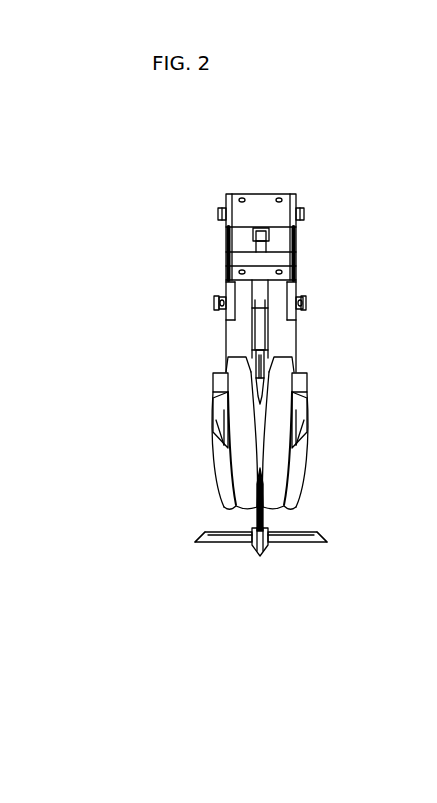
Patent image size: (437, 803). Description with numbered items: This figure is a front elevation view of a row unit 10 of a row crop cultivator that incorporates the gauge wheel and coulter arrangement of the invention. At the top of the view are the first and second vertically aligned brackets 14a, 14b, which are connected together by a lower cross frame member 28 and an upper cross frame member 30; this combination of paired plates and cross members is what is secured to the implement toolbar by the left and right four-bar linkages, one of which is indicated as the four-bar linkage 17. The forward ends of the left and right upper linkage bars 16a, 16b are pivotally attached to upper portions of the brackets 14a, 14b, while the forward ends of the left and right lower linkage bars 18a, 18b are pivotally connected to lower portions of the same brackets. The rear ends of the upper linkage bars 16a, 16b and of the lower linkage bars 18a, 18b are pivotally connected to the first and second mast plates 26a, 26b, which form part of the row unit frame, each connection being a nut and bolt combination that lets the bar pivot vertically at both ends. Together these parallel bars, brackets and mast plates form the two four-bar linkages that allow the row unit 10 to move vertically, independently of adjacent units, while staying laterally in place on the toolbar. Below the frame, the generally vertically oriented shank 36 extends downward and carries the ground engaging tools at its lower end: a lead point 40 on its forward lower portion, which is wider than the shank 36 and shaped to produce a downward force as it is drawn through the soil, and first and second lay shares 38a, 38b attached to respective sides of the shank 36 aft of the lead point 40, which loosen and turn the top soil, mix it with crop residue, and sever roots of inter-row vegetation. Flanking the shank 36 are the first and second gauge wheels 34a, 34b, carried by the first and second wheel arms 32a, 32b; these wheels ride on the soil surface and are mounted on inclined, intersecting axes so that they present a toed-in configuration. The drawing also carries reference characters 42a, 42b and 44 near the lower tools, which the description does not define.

The row unit 10 is at (365, 184).
The first vertically aligned bracket 14a is at (297, 235).
The second vertically aligned bracket 14b is at (224, 235).
The left upper linkage bar 16a is at (298, 203).
The right upper linkage bar 16b is at (216, 210).
The four-bar linkage 17 is at (225, 208).
The left lower linkage bar 18a is at (297, 313).
The right lower linkage bar 18b is at (222, 317).
The first mast plate 26a is at (285, 332).
The second mast plate 26b is at (233, 338).
The lower cross frame member 28 is at (251, 257).
The upper cross frame member 30 is at (267, 202).
The first wheel arm 32a is at (307, 395).
The second wheel arm 32b is at (213, 397).
The first gauge wheel 34a is at (293, 480).
The second gauge wheel 34b is at (218, 476).
The shank 36 is at (262, 518).
The first lay share 38a is at (318, 543).
The second lay share 38b is at (205, 534).
The lead point 40 is at (260, 557).
The wing 42a is at (292, 532).
The wing 42b is at (213, 532).
The shank 44 is at (263, 395).